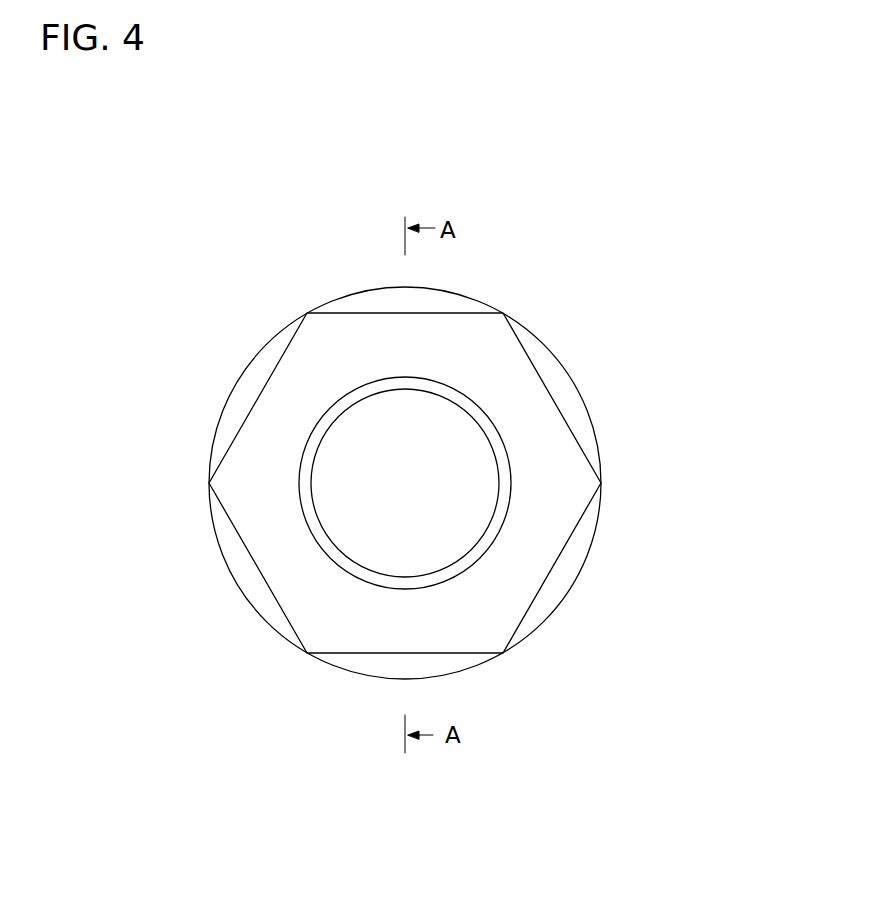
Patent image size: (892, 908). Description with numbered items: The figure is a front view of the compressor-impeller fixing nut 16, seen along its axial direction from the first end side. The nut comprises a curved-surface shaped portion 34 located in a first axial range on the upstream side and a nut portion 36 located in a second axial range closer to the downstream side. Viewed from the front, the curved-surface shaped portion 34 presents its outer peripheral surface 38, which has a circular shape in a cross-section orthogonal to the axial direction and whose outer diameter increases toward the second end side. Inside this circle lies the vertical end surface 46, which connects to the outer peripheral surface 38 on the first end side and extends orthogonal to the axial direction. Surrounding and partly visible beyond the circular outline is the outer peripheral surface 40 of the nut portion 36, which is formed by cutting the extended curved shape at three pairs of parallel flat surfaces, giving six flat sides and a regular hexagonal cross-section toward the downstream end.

The compressor-impeller fixing nut 16 is at (456, 445).
The curved-surface shaped portion 34 is at (456, 483).
The outer peripheral surface 38 is at (513, 408).
The nut portion 36 is at (406, 457).
The outer peripheral surface 40 is at (436, 314).
The vertical end surface 46 is at (504, 482).